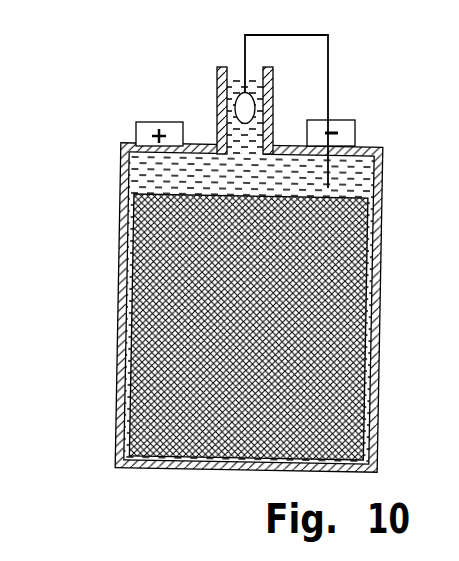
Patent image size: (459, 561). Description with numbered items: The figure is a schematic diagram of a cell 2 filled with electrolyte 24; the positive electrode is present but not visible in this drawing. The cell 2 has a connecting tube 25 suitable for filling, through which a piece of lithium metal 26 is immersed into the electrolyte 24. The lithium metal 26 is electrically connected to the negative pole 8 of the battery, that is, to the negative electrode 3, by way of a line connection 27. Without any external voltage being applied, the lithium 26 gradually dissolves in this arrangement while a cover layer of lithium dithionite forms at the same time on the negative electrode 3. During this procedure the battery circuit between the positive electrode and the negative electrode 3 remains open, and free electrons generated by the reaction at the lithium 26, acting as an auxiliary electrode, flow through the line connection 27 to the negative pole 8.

The cell 2 is at (375, 207).
The negative electrode 3 is at (347, 295).
The negative pole 8 is at (355, 128).
The electrolyte 24 is at (148, 175).
The connecting tube 25 is at (220, 73).
The lithium metal 26 is at (243, 108).
The line connection 27 is at (330, 60).